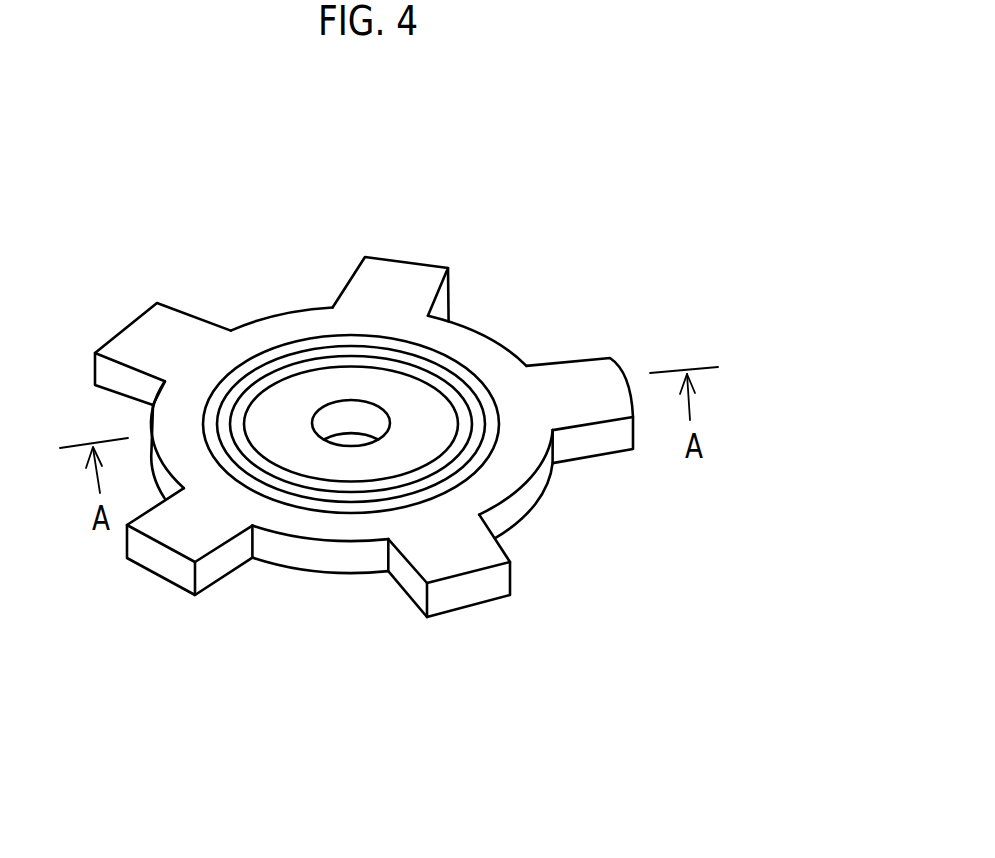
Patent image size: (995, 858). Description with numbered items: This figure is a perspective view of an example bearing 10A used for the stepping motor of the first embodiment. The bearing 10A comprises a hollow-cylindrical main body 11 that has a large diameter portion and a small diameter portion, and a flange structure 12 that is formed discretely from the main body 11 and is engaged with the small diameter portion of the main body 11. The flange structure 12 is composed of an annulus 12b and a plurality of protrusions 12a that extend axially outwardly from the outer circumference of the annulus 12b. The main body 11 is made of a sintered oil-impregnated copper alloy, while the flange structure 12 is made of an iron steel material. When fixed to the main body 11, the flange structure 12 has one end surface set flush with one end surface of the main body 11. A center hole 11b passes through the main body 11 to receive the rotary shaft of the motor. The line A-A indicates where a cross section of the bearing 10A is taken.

The bearing 10A is at (628, 243).
The main body 11 is at (290, 397).
The center hole 11b is at (362, 410).
The flange structure 12 is at (350, 283).
The protrusions 12a is at (398, 282).
The annulus 12b is at (493, 355).